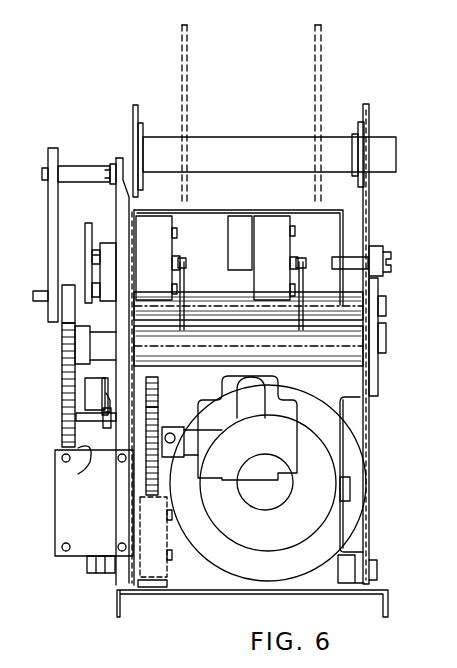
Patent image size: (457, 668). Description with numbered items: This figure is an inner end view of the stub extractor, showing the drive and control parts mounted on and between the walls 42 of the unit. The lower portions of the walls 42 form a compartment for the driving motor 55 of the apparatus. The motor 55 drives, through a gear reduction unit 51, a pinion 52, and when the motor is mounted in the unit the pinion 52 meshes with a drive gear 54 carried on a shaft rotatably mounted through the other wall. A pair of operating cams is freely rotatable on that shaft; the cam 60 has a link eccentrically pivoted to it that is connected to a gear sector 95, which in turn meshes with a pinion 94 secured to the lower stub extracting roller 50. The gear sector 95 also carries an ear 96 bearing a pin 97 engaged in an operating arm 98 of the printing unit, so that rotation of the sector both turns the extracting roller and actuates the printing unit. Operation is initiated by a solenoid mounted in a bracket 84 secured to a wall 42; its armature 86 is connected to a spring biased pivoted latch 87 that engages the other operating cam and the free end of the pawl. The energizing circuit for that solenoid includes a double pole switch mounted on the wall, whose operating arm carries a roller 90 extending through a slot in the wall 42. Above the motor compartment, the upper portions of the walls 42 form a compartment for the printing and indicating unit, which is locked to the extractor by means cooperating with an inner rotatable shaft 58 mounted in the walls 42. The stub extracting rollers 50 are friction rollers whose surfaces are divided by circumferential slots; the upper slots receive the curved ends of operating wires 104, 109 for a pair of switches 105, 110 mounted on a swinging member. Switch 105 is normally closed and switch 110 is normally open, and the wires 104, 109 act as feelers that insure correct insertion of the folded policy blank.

The wall 42 is at (133, 120).
The inner rotatable shaft 58 is at (262, 150).
The operating arm 98 is at (55, 221).
The ear 96 is at (70, 283).
The pin 97 is at (40, 291).
The pinion 94 is at (62, 336).
The operating cam 60 is at (88, 392).
The spring biased pivoted latch 87 is at (108, 394).
The gear sector 95 is at (62, 421).
The armature 86 is at (85, 456).
The bracket 84 is at (62, 500).
The roller 90 is at (100, 572).
The switch 105 is at (162, 262).
The operating wire 104 is at (185, 280).
The switch 110 is at (277, 246).
The operating wire 109 is at (300, 282).
The lower stub extracting roller 50 is at (345, 352).
The drive gear 54 is at (158, 386).
The pinion 52 is at (158, 418).
The gear reduction unit 51 is at (262, 451).
The driving motor 55 is at (238, 557).